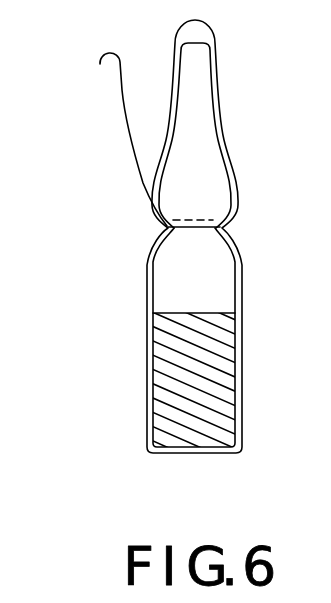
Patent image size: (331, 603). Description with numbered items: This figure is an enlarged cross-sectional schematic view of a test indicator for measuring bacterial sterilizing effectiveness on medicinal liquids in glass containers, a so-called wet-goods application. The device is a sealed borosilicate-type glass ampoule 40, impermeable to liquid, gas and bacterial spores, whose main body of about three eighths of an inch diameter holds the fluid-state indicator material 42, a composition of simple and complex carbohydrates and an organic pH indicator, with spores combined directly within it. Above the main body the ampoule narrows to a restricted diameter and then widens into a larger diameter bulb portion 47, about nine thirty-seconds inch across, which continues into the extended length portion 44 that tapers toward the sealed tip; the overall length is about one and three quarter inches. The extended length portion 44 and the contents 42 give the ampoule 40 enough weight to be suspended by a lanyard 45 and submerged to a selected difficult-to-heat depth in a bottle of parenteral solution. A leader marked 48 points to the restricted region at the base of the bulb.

The sealed glass ampoule 40 is at (135, 450).
The fluid-state indicator material 42 is at (218, 395).
The extended length portion 44 is at (220, 81).
The lanyard 45 is at (122, 100).
The bulb portion 47 is at (240, 210).
The score line 48 is at (192, 233).